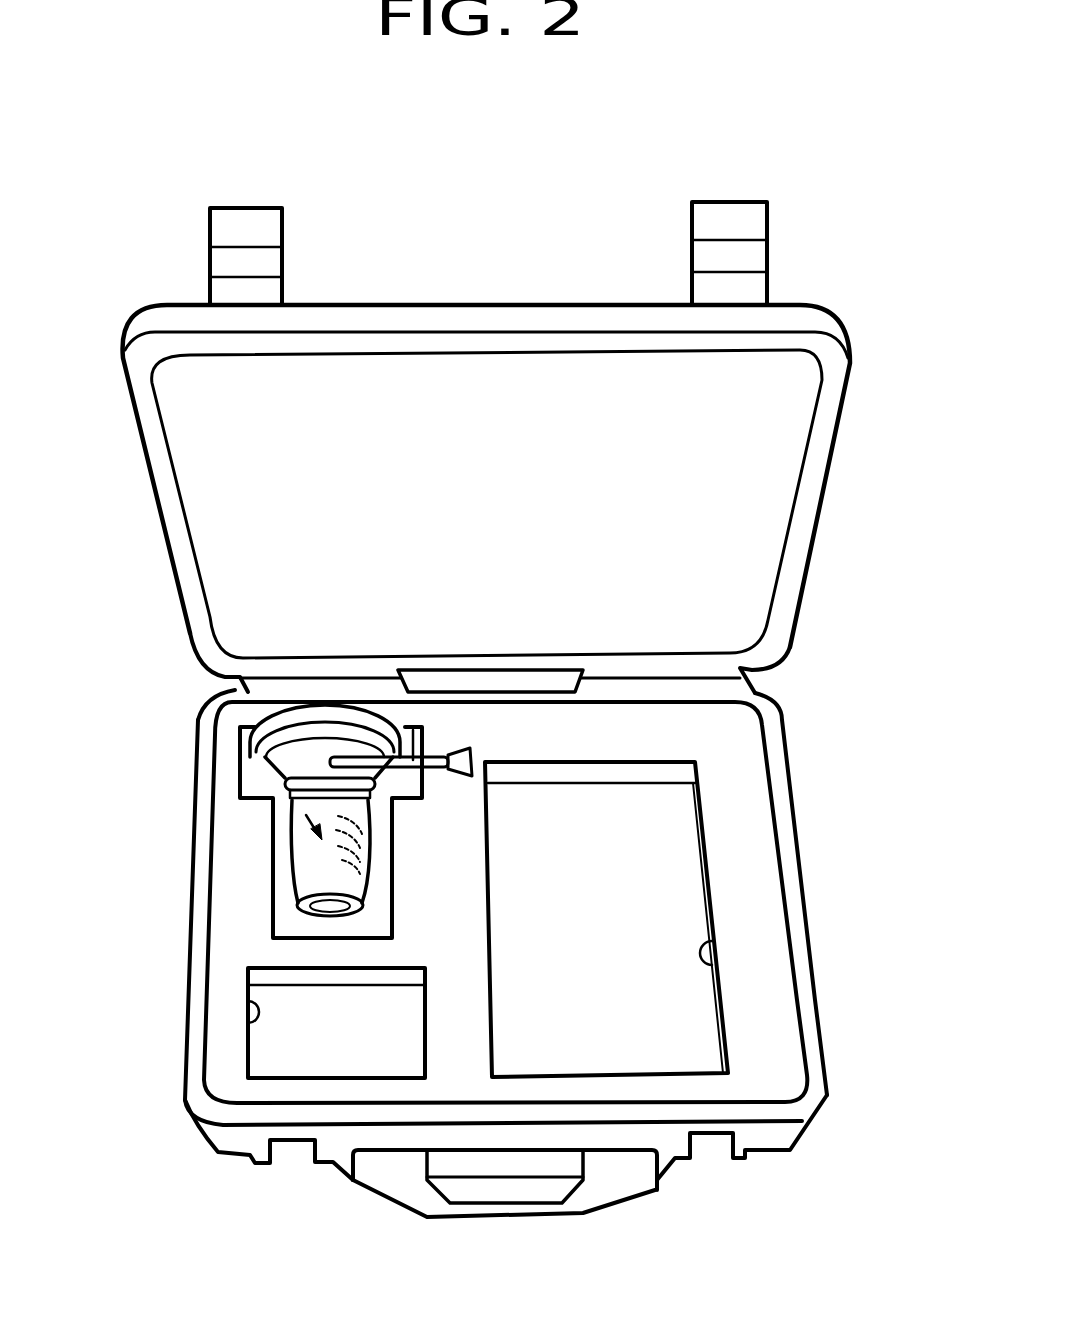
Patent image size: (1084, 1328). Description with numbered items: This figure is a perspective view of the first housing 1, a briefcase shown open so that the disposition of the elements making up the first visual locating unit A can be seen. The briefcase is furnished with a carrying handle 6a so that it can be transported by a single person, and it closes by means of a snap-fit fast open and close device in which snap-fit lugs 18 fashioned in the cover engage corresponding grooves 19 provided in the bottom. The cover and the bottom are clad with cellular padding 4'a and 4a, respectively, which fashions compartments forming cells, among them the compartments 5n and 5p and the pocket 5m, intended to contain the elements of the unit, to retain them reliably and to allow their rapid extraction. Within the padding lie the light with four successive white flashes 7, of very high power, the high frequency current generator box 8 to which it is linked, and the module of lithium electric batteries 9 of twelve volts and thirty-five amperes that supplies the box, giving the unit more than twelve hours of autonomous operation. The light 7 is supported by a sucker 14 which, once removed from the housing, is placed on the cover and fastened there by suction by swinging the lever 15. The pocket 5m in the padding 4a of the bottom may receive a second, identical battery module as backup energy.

The first housing 1 is at (803, 1133).
The visual locating unit A is at (233, 1136).
The cellular padding 4a is at (745, 845).
The cellular padding 4'a is at (521, 499).
The pocket 5m is at (710, 940).
The compartment 5n is at (285, 883).
The compartment 5p is at (250, 1003).
The carrying handle 6a is at (588, 1197).
The light with four successive white flashes 7 is at (270, 787).
The high frequency current generator box 8 is at (313, 1050).
The module of lithium electric batteries 9 is at (643, 910).
The sucker 14 is at (303, 715).
The lever 15 is at (300, 748).
The snap-fit lugs 18 is at (717, 227).
The grooves 19 is at (297, 1142).